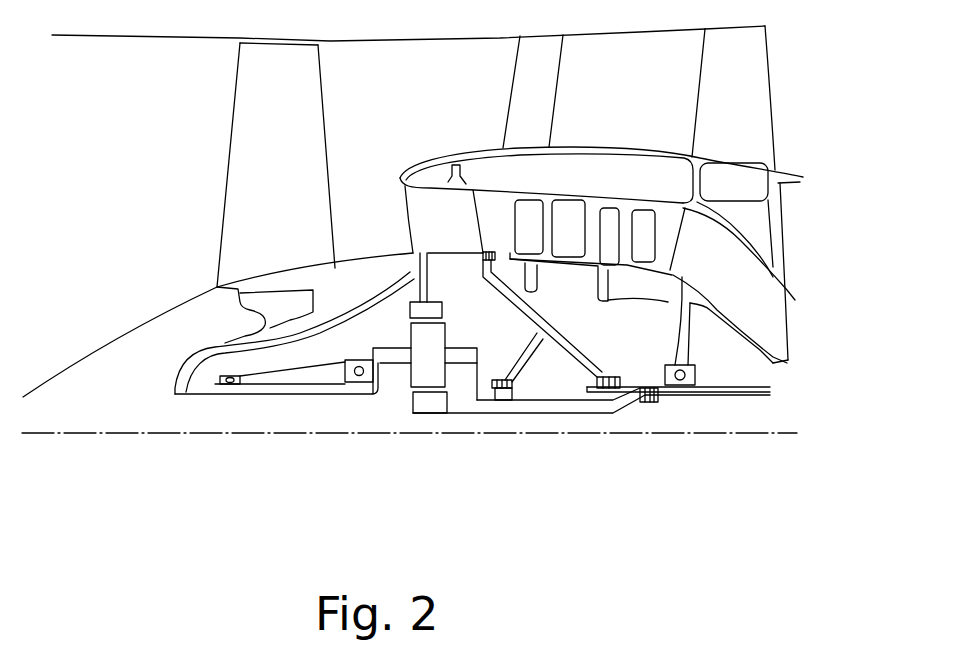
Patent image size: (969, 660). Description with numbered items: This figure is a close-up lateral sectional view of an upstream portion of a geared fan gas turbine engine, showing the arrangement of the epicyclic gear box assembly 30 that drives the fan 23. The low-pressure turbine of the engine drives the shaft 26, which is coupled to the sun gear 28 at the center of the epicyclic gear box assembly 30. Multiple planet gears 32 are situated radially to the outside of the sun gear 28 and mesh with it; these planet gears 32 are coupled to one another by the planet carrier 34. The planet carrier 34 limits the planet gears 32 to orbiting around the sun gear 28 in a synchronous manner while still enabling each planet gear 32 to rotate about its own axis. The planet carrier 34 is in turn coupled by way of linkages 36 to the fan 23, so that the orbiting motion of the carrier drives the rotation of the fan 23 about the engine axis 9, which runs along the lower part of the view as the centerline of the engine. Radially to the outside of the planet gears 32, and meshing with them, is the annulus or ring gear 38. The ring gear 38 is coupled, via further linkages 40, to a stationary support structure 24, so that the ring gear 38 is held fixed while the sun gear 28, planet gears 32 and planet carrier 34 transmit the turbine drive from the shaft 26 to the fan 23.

The engine axis 9 is at (207, 434).
The fan 23 is at (243, 167).
The stationary support structure 24 is at (433, 217).
The shaft 26 is at (573, 415).
The sun gear 28 is at (430, 403).
The epicyclic gear box assembly 30 is at (380, 413).
The planet gears 32 is at (415, 375).
The planet carrier 34 is at (467, 388).
The linkages 36 is at (385, 377).
The ring gear 38 is at (410, 312).
The linkages 40 is at (430, 289).